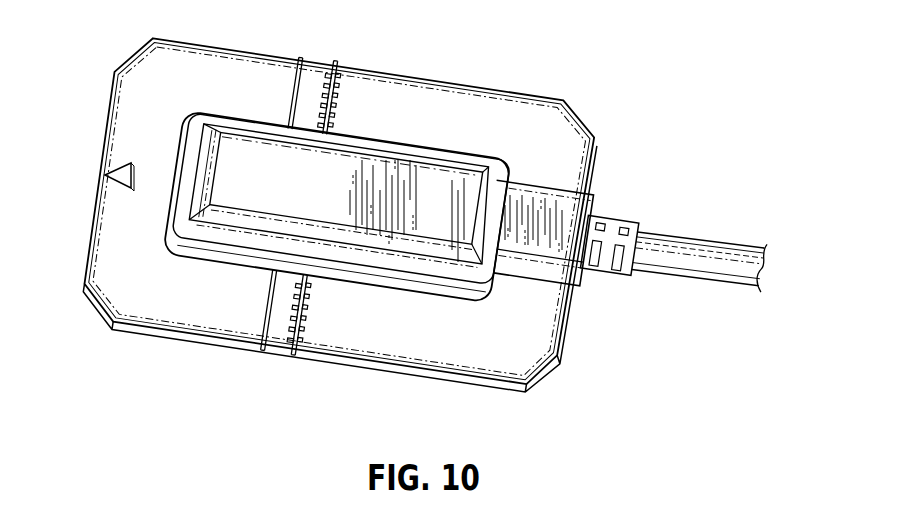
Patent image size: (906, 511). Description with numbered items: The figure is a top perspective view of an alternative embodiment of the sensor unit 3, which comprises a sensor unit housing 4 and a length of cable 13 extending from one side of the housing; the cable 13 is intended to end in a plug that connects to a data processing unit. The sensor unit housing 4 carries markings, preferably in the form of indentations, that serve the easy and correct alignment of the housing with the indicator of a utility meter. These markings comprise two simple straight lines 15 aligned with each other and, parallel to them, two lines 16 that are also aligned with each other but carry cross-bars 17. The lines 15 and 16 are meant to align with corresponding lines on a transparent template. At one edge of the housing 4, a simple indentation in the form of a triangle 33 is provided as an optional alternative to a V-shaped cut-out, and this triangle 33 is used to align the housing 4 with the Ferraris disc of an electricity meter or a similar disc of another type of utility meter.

The sensor unit 3 is at (428, 244).
The sensor unit housing 4 is at (434, 375).
The cable 13 is at (711, 260).
The straight lines 15 is at (293, 91).
The lines with cross-bars 16 is at (334, 64).
The cross-bars 17 is at (333, 96).
The triangle indentation 33 is at (118, 168).